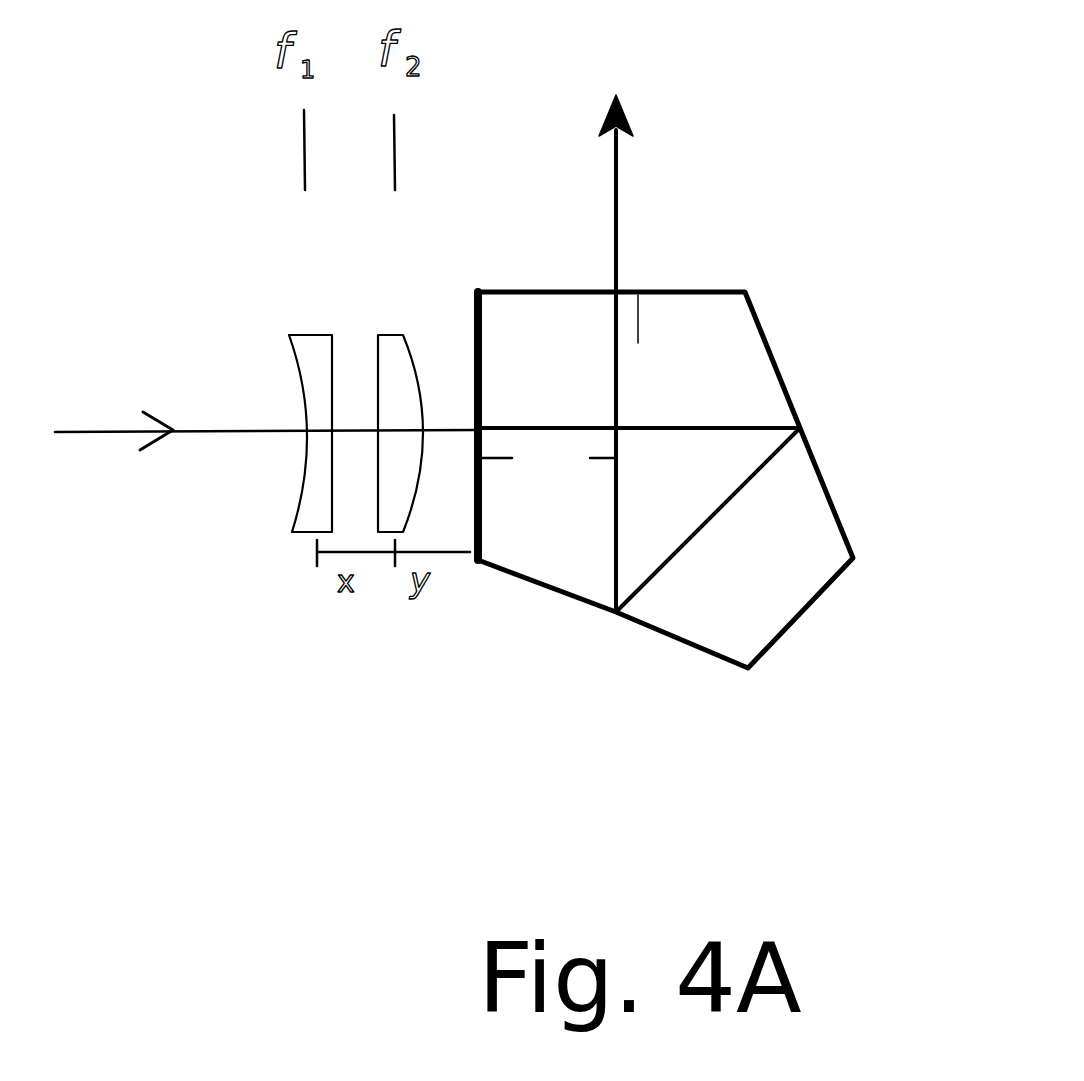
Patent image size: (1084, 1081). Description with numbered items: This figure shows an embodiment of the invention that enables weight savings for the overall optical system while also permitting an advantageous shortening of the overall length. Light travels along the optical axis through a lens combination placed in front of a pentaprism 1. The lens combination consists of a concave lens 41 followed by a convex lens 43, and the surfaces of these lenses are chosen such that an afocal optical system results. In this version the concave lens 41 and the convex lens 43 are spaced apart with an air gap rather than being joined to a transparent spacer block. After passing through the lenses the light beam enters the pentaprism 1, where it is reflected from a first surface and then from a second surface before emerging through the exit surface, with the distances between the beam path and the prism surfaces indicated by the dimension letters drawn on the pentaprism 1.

The pentaprism 1 is at (740, 518).
The concave lens 41 is at (303, 332).
The convex lens 43 is at (394, 330).